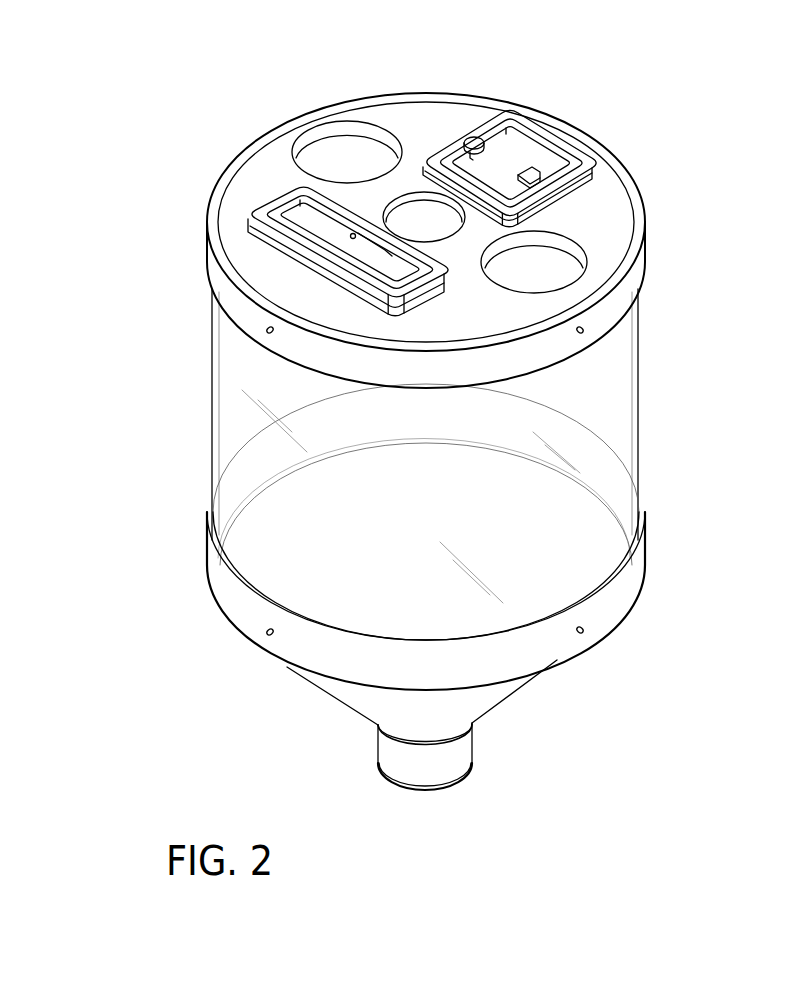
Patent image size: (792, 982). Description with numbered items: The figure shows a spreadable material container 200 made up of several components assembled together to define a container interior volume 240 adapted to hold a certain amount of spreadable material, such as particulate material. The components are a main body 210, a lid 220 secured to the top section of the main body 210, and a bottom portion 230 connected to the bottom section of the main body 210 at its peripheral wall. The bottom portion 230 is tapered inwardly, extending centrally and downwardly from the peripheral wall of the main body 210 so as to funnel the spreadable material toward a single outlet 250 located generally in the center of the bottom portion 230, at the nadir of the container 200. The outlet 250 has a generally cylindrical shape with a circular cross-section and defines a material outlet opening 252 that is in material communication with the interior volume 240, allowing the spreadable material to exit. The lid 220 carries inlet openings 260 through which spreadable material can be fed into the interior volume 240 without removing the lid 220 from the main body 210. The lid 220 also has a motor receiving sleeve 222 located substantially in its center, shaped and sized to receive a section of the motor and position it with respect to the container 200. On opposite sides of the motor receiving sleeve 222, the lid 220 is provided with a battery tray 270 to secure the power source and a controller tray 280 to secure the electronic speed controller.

The spreadable material container 200 is at (656, 160).
The main body 210 is at (640, 387).
The lid 220 is at (624, 215).
The motor receiving sleeve 222 is at (413, 208).
The bottom portion 230 is at (627, 597).
The container interior volume 240 is at (346, 567).
The outlet 250 is at (429, 764).
The material outlet opening 252 is at (440, 790).
The inlet openings 260 is at (350, 166).
The battery tray 270 is at (246, 215).
The controller tray 280 is at (512, 120).